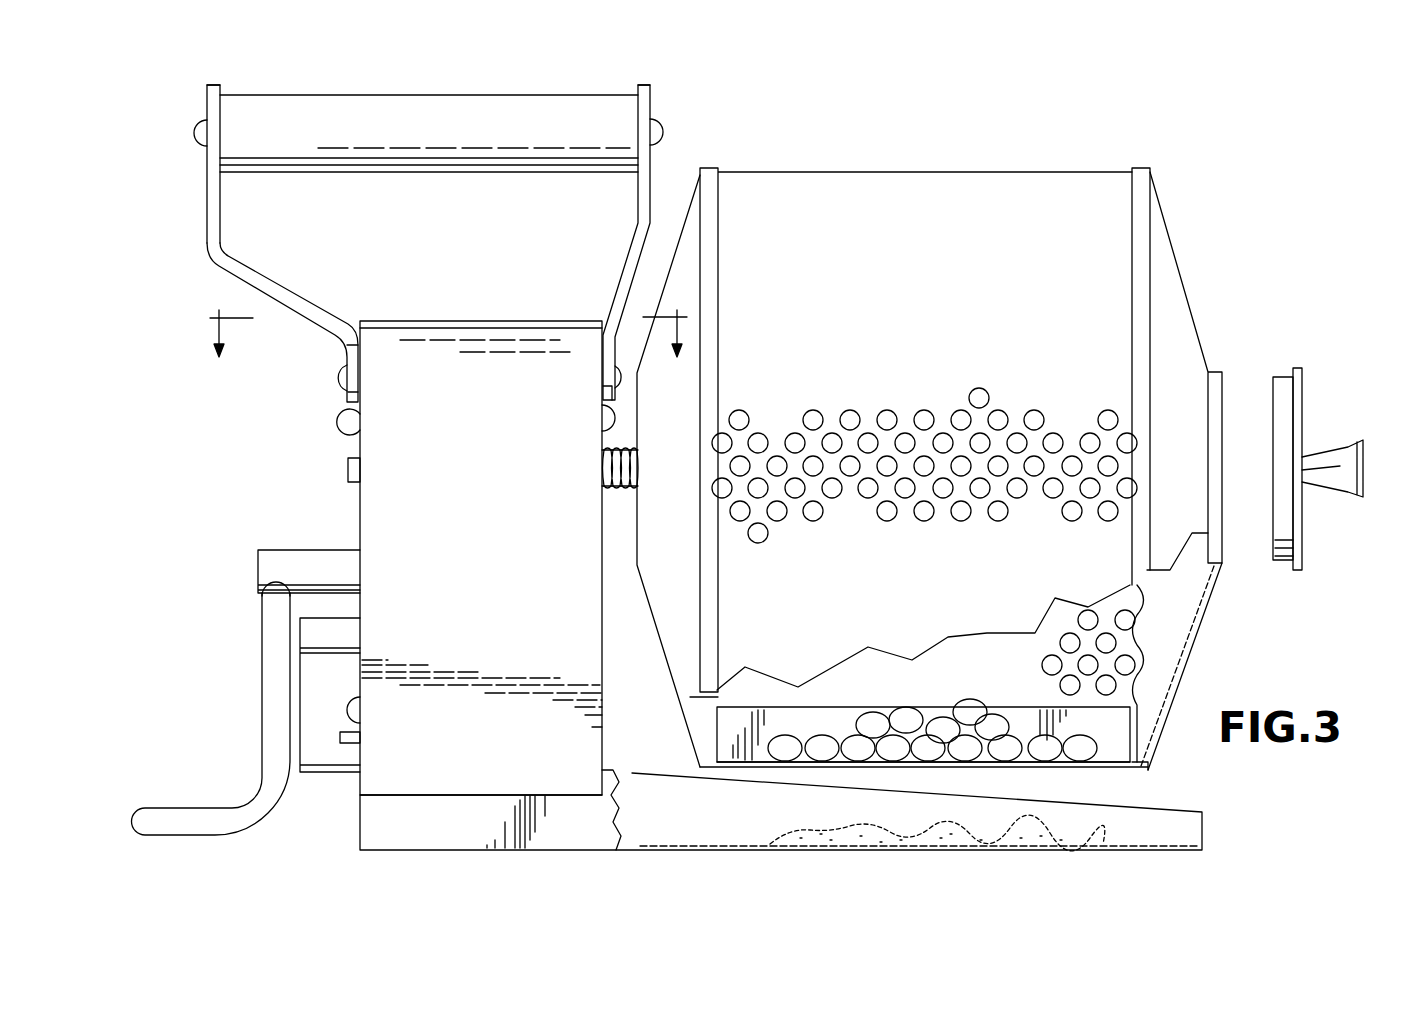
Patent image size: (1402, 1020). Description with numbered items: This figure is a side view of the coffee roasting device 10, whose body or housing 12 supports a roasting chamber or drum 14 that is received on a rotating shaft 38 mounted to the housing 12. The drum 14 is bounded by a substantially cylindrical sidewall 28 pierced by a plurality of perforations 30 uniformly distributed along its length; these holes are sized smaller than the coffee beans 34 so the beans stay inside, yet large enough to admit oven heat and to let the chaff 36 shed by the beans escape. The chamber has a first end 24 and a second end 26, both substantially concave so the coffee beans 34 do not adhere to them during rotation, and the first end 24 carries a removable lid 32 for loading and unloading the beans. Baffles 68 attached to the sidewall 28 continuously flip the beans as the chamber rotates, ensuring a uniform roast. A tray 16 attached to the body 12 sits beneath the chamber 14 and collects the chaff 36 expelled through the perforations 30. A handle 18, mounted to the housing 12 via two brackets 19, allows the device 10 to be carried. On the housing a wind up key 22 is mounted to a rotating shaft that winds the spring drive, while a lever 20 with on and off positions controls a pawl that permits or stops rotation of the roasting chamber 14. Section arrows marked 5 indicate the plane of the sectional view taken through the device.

The coffee roasting device 10 is at (1100, 104).
The body or housing 12 is at (375, 520).
The roasting chamber or drum 14 is at (1008, 170).
The tray 16 is at (1203, 830).
The handle 18 is at (517, 174).
The brackets 19 is at (205, 103).
The lever 20 is at (328, 772).
The wind up key 22 is at (197, 807).
The first end 24 is at (1182, 268).
The second end 26 is at (692, 193).
The cylindrical sidewall 28 is at (885, 188).
The perforations 30 is at (849, 411).
The removable lid 32 is at (1303, 392).
The coffee beans 34 is at (874, 722).
The chaff 36 is at (1080, 837).
The rotating shaft 38 is at (622, 493).
The baffles 68 is at (828, 712).
The section line 5- 5 is at (448, 320).